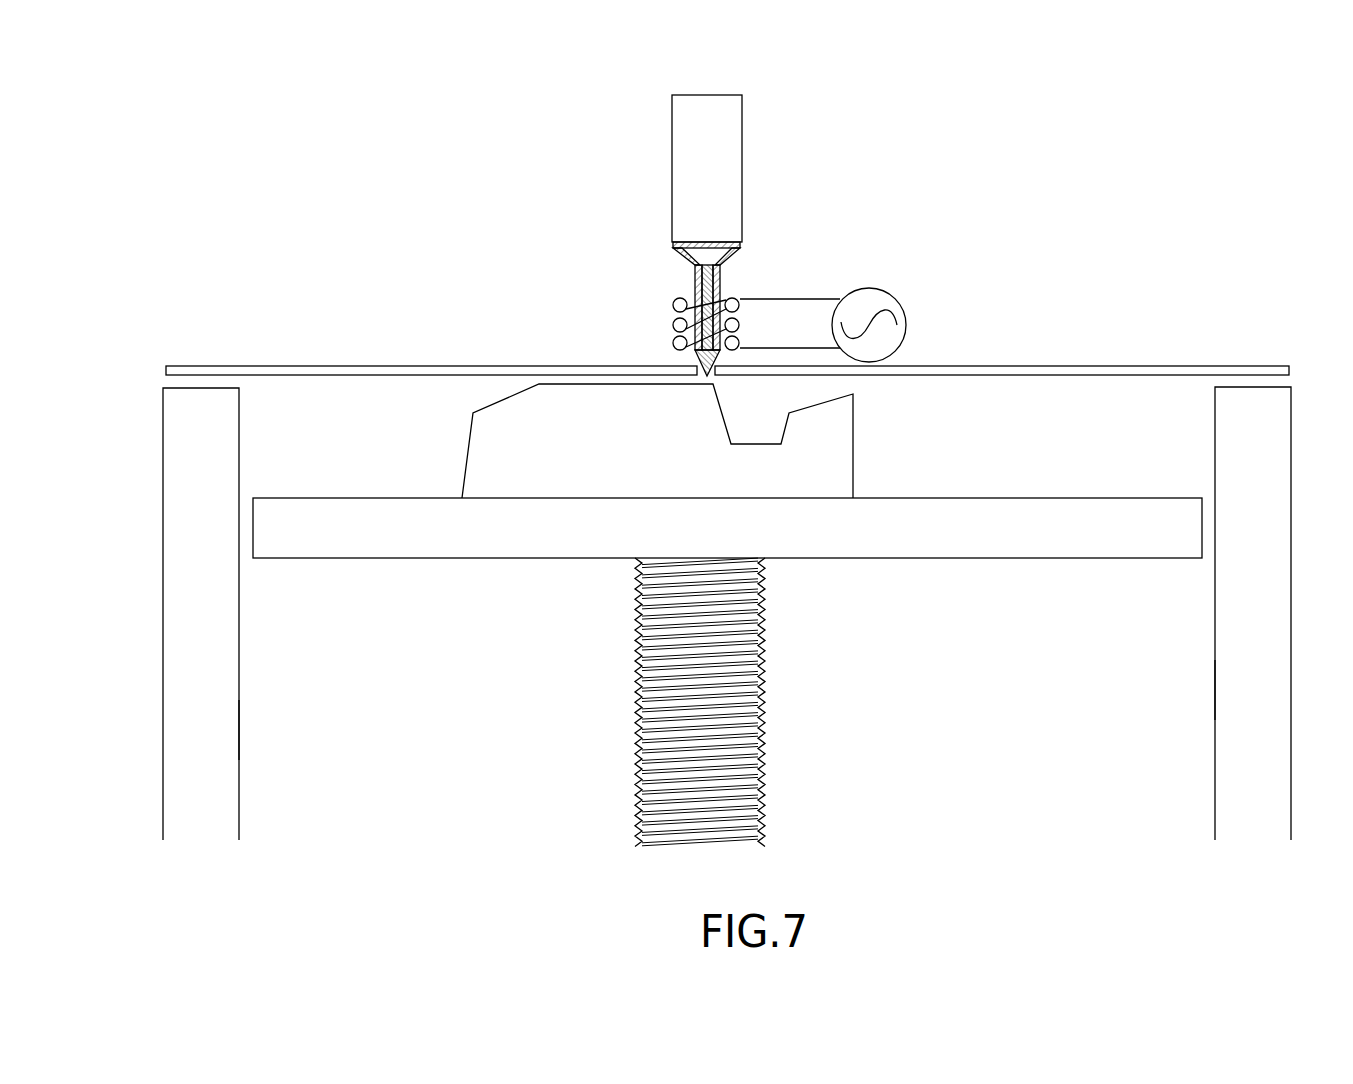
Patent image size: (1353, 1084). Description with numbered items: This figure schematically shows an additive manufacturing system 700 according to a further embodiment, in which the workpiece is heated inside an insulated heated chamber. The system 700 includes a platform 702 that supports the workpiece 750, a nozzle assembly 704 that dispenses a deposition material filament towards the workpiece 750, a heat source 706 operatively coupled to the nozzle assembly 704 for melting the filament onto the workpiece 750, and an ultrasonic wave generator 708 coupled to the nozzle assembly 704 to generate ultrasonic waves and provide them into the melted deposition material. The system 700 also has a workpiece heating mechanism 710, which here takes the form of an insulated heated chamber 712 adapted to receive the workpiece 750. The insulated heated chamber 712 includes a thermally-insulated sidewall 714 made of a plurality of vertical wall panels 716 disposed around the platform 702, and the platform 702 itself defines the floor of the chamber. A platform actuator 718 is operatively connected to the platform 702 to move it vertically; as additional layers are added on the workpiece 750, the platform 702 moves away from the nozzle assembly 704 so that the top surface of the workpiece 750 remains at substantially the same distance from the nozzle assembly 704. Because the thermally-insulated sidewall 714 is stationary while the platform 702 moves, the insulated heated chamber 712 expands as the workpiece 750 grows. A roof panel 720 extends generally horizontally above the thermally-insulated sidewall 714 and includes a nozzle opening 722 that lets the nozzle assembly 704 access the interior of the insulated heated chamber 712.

The additive manufacturing system 700 is at (198, 178).
The platform 702 is at (930, 556).
The nozzle assembly 704 is at (658, 263).
The heat source 706 is at (831, 290).
The ultrasonic wave generator 708 is at (756, 172).
The workpiece heating mechanism 710 is at (1203, 318).
The insulated heated chamber 712 is at (282, 393).
The thermally-insulated sidewall 714 is at (228, 777).
The vertical wall panels 716 is at (227, 721).
The platform actuator 718 is at (642, 742).
The roof panel 720 is at (397, 365).
The nozzle opening 722 is at (697, 362).
The workpiece 750 is at (641, 456).